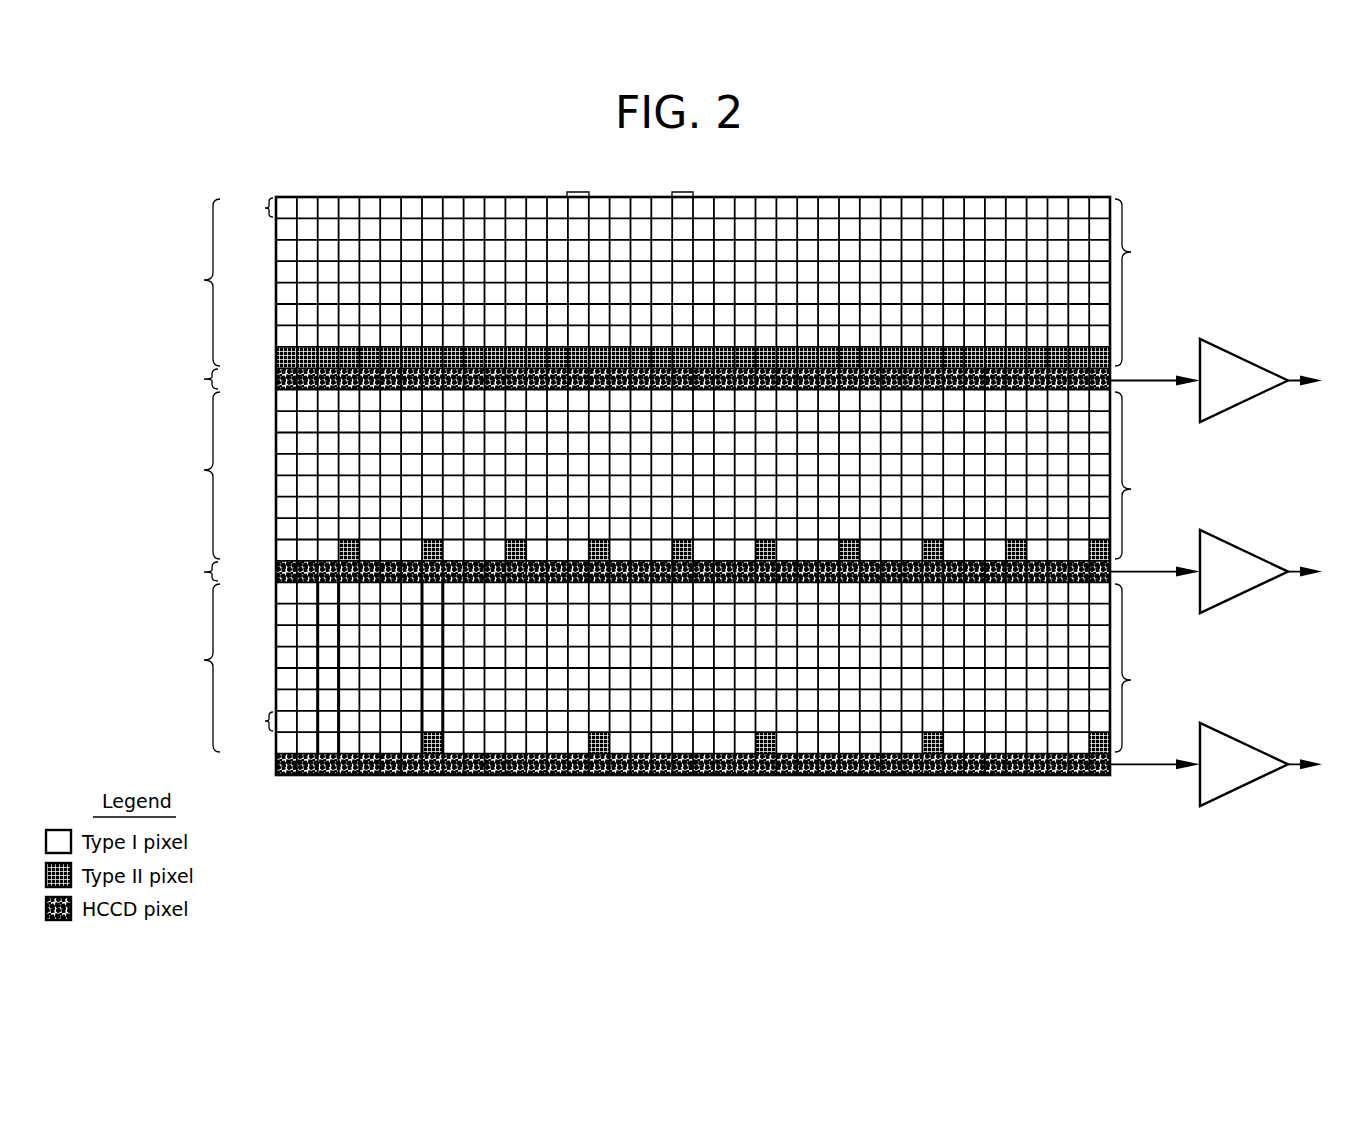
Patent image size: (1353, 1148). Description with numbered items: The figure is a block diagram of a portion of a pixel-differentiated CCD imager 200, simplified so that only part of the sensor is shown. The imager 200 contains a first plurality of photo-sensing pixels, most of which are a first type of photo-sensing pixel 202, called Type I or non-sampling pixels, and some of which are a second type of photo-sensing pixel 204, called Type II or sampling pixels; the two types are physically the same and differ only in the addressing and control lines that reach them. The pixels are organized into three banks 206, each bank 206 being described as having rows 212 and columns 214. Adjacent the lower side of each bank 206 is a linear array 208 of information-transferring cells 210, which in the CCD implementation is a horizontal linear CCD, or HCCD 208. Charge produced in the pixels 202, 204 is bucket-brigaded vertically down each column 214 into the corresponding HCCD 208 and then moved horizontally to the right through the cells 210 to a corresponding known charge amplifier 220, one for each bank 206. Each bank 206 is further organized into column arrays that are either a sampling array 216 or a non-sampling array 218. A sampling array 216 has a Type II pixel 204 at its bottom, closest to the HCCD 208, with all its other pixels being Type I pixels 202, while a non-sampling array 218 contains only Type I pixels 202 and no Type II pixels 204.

The pixel-differentiated CCD imager 200 is at (641, 507).
The first type of photo-sensing pixel (Type I pixel) 202 is at (385, 204).
The second type of photo-sensing pixel (Type II pixel) 204 is at (297, 351).
The bank 206 is at (148, 660).
The linear array of information-transferring cells (HCCD) 208 is at (96, 591).
The information-transferring cell 210 is at (1108, 358).
The row 212 is at (249, 464).
The column 214 is at (580, 190).
The sampling array 216 is at (444, 722).
The non-sampling array 218 is at (316, 720).
The charge amplifier 220 is at (1260, 743).